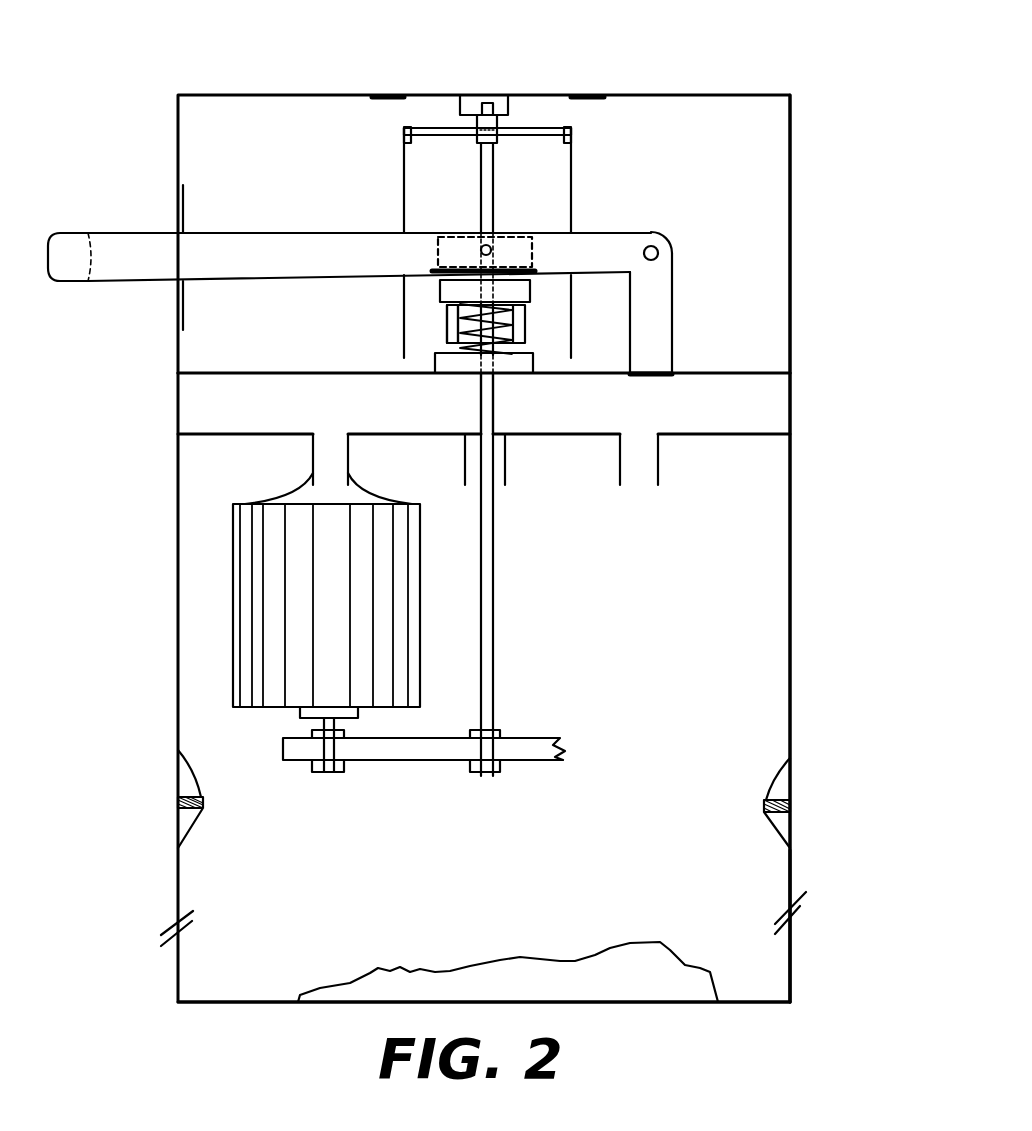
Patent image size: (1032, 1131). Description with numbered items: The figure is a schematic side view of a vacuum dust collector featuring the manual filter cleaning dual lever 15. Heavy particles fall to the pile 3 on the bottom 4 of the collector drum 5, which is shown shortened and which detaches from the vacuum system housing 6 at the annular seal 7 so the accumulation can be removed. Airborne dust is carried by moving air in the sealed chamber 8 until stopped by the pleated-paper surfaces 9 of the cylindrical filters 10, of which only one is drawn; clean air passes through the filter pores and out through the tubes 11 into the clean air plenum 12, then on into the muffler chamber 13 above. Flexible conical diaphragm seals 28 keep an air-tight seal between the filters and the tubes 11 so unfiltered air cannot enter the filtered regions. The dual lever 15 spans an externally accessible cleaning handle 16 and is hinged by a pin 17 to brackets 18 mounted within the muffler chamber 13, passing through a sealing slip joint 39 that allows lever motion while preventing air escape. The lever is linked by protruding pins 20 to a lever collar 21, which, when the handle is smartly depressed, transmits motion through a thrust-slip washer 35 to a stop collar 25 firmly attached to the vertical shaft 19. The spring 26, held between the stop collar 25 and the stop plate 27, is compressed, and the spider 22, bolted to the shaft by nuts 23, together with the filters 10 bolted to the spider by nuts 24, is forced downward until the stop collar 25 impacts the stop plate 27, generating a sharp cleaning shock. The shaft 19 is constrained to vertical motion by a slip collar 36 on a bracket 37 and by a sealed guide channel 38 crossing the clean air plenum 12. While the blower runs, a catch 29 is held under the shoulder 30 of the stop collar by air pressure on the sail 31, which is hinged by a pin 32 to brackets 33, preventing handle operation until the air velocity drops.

The pile 3 is at (603, 950).
The bottom 4 is at (240, 1002).
The collector drum 5 is at (789, 876).
The vacuum system housing 6 is at (793, 250).
The annular seal 7 is at (176, 806).
The sealed chamber 8 is at (702, 595).
The pleated-paper surfaces 9 is at (397, 637).
The cylindrical filters 10 is at (272, 708).
The tubes 11 is at (348, 462).
The clean air plenum 12 is at (252, 398).
The muffler chamber 13 is at (727, 143).
The dual lever 15 is at (102, 232).
The cleaning handle 16 is at (52, 232).
The pin 17 is at (658, 247).
The brackets 18 is at (672, 310).
The vertical shaft 19 is at (492, 198).
The protruding pins 20 is at (492, 248).
The lever collar 21 is at (435, 248).
The spider 22 is at (396, 762).
The nuts 23 is at (500, 733).
The nuts 24 is at (347, 733).
The stop collar 25 is at (440, 290).
The spring 26 is at (512, 325).
The stop plate 27 is at (535, 371).
The flexible conical diaphragm seals 28 is at (380, 492).
The catch 29 is at (455, 320).
The shoulder 30 is at (445, 318).
The sail 31 is at (403, 182).
The pin 32 is at (578, 135).
The brackets 33 is at (395, 103).
The thrust-slip washer 35 is at (525, 276).
The slip collar 36 is at (478, 145).
The bracket 37 is at (510, 111).
The guide channel 38 is at (478, 403).
The sealing slip joint 39 is at (183, 222).